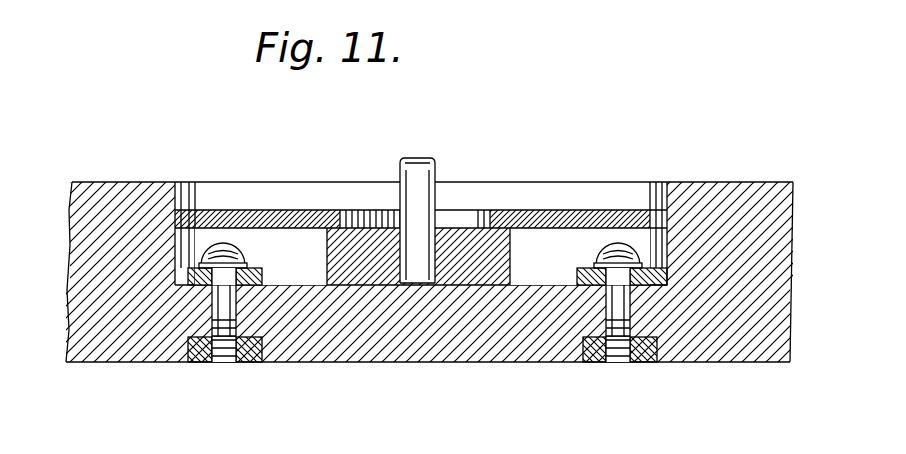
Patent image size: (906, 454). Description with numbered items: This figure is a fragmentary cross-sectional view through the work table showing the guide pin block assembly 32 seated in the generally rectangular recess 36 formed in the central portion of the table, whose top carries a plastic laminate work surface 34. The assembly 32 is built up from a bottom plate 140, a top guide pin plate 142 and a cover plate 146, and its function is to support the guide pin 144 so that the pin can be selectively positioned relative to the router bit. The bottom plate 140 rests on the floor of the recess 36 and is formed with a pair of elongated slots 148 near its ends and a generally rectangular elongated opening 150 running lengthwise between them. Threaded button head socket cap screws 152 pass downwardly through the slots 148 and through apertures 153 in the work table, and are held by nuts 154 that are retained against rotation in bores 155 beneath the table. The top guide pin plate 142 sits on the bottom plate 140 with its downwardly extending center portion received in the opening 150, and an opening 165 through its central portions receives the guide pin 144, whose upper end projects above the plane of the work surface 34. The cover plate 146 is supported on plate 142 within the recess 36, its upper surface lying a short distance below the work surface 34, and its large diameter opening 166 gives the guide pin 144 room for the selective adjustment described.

The guide pin block assembly 32 is at (514, 156).
The work surface 34 is at (717, 182).
The recess 36 is at (190, 184).
The bottom plate 140 is at (664, 279).
The top guide pin plate 142 is at (370, 287).
The guide pin 144 is at (420, 162).
The cover plate 146 is at (578, 210).
The elongated slots 148 is at (423, 298).
The elongated opening 150 is at (270, 244).
The threaded button head socket cap screws 152 is at (222, 246).
The apertures 153 is at (240, 312).
The nuts 154 is at (240, 363).
The bores 155 is at (190, 364).
The opening 165 is at (411, 284).
The opening 166 is at (480, 214).